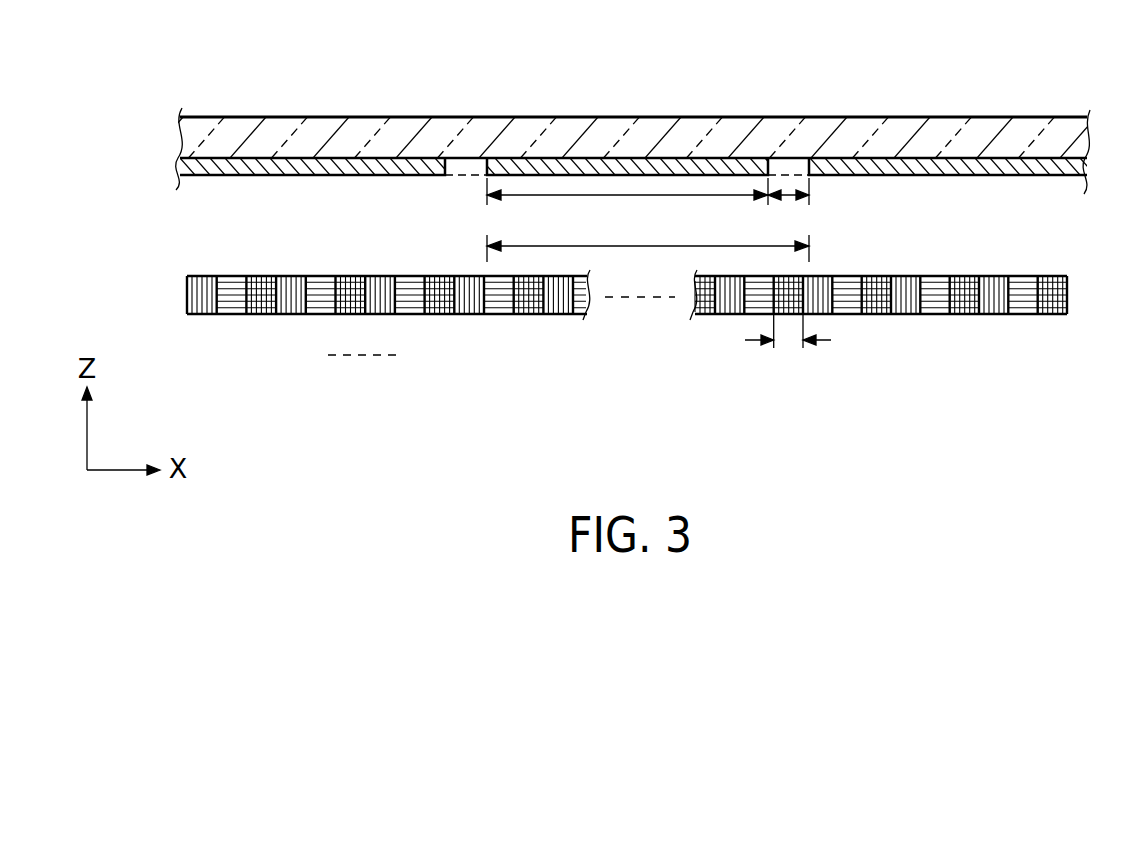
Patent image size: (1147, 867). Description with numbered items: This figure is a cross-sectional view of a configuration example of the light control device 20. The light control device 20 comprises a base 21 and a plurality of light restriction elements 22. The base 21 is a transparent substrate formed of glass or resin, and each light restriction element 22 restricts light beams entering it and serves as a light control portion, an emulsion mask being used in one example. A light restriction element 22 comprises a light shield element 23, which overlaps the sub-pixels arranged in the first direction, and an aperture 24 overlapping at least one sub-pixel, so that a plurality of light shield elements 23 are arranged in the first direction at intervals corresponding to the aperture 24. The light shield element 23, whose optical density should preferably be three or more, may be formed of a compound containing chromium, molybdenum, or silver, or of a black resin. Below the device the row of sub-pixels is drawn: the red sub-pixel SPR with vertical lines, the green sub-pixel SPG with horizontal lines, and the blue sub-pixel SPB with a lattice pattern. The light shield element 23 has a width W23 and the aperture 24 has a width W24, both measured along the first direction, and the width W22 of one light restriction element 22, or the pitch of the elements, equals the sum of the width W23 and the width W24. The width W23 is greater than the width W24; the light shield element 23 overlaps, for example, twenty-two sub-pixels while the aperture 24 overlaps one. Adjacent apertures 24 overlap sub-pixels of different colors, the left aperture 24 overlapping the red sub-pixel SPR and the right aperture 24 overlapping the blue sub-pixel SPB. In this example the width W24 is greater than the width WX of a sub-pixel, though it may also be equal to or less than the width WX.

The light control device 20 is at (1050, 114).
The base 21 is at (943, 130).
The light restriction element 22 is at (670, 60).
The light shield element 23 is at (693, 167).
The aperture 24 is at (786, 165).
The red sub-pixel SPR is at (197, 305).
The green sub-pixel SPG is at (231, 305).
The blue sub-pixel SPB is at (262, 305).
The width of the sub-pixel WX is at (788, 346).
The width of the light restriction element W22 is at (648, 256).
The width of the light shield element W23 is at (627, 203).
The width of the aperture W24 is at (790, 208).